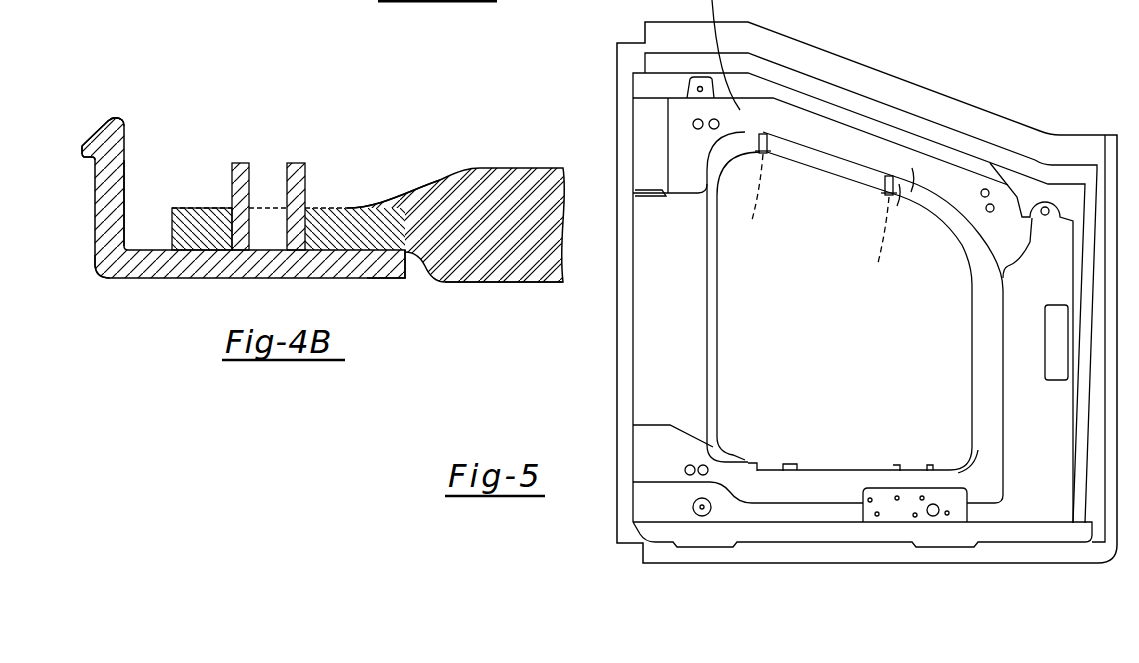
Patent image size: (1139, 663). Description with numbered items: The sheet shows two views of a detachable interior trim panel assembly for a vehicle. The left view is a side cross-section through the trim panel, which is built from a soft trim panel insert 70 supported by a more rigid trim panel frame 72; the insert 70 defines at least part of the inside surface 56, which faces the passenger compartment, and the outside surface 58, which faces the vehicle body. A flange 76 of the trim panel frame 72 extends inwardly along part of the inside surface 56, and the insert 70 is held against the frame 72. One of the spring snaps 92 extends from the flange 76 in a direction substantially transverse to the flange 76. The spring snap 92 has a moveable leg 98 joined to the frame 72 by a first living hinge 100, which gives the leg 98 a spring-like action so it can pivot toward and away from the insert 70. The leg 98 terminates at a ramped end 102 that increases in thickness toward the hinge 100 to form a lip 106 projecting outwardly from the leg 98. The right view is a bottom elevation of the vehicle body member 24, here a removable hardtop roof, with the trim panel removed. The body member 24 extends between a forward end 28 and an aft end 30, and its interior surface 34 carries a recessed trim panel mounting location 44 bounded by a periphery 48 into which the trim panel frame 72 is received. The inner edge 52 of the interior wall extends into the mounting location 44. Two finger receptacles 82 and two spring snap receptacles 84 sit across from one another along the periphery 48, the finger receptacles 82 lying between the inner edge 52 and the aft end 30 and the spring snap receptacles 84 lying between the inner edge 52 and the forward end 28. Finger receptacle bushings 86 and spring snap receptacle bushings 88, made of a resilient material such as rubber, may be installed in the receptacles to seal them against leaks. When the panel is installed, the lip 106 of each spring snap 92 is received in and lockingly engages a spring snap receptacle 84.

In FIG. 5, the vehicle body member 24 is at (613, 410).
In FIG. 5, the forward end 28 is at (660, 565).
In FIG. 5, the aft end 30 is at (958, 96).
In FIG. 5, the interior surface 34 is at (1016, 192).
In FIG. 5, the trim panel mounting location 44 is at (888, 348).
In FIG. 5, the periphery 48 is at (720, 310).
In FIG. 5, the inner edge 52 is at (840, 175).
In FIG. 4B, the inside surface 56 is at (476, 285).
In FIG. 4B, the outside surface 58 is at (423, 183).
In FIG. 4B, the trim panel insert 70 is at (490, 172).
In FIG. 4B, the trim panel frame 72 is at (168, 306).
In FIG. 4B, the flange 76 is at (380, 273).
In FIG. 5, the finger receptacles 82 is at (768, 128).
In FIG. 5, the spring snap receptacles 84 is at (770, 478).
In FIG. 5, the finger receptacle bushings 86 is at (814, 222).
In FIG. 5, the spring snap receptacle bushings 88 is at (755, 460).
In FIG. 4B, the spring snaps 92 is at (89, 129).
In FIG. 4B, the moveable leg 98 is at (116, 204).
In FIG. 4B, the first living hinge 100 is at (103, 265).
In FIG. 4B, the ramped end 102 is at (97, 127).
In FIG. 4B, the lip 106 is at (84, 160).